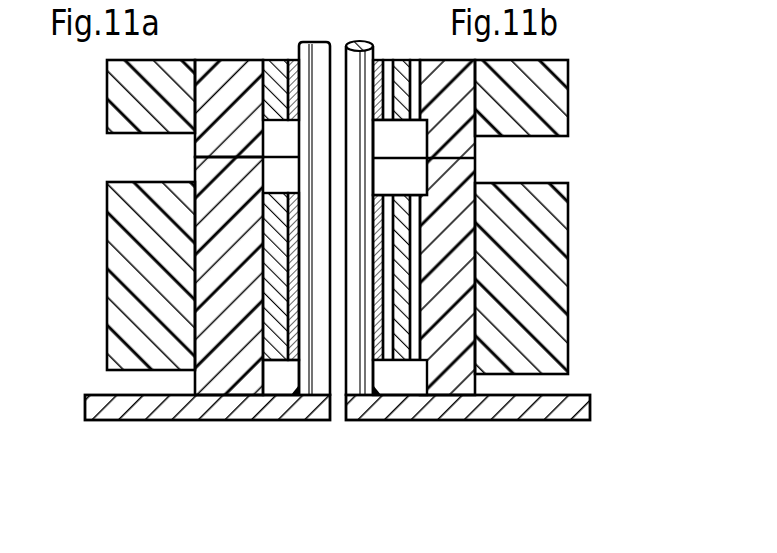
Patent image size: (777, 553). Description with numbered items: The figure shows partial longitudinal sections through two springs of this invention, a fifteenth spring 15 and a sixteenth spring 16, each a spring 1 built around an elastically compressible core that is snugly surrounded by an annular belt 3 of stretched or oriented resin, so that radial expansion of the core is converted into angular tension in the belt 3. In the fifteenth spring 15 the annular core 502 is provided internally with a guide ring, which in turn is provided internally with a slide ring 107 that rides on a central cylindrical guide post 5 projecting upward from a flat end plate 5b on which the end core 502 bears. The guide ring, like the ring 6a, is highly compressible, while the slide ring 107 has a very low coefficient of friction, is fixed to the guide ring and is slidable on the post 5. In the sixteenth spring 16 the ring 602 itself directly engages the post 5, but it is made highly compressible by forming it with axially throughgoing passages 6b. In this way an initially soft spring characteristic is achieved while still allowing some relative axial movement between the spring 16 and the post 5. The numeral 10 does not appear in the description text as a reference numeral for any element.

In FIG. 11A, the spring 1 is at (94, 260).
In FIG. 11B, the spring 1 is at (584, 347).
In FIG. 11A, the fifteenth spring 15 is at (98, 96).
In FIG. 11B, the sixteenth spring 16 is at (582, 97).
In FIG. 11A, the annular belt 3 is at (123, 335).
In FIG. 11B, the annular belt 3 is at (547, 299).
In FIG. 11A, the annular core 502 is at (221, 193).
In FIG. 11B, the ring 602 is at (453, 238).
In FIG. 11A, the ring 6a is at (275, 333).
In FIG. 11B, the axially throughgoing passages 6b is at (416, 350).
In FIG. 11A, the bore 10 is at (242, 362).
In FIG. 11A, the slide ring 107 is at (302, 332).
In FIG. 11A, the central cylindrical guide post 5 is at (332, 397).
In FIG. 11B, the central cylindrical guide post 5 is at (358, 387).
In FIG. 11A, the flat end plate 5b is at (129, 405).
In FIG. 11B, the flat end plate 5b is at (525, 405).